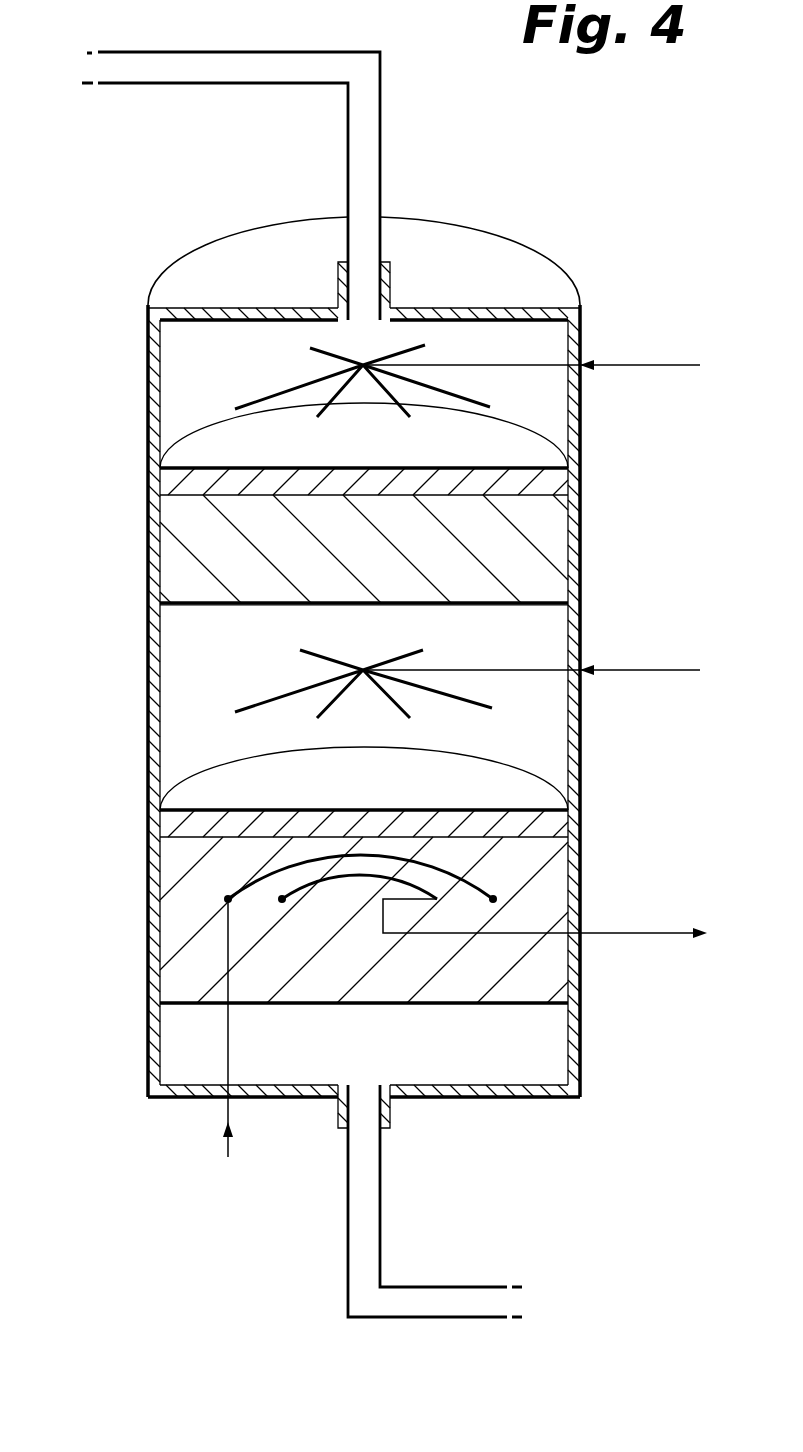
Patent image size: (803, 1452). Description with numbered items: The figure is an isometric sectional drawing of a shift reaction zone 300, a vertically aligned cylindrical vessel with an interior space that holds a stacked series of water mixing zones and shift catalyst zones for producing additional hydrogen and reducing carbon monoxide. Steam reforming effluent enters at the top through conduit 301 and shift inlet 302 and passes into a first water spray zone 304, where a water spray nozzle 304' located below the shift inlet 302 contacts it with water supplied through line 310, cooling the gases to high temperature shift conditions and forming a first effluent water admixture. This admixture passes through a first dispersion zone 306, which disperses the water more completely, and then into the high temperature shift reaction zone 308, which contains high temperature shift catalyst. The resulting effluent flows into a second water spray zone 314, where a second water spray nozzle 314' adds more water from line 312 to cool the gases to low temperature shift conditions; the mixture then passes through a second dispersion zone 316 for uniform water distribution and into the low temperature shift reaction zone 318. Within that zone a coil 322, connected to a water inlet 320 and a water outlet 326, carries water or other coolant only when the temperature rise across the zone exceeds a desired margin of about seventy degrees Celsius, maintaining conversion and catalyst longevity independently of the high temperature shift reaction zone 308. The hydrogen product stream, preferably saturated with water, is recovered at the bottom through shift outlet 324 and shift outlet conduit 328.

The shift reaction zone 300 is at (557, 259).
The conduit 301 is at (381, 72).
The shift inlet 302 is at (382, 277).
The first water spray zone 304 is at (364, 397).
The water spray nozzle 304' is at (358, 373).
The first dispersion zone 306 is at (568, 484).
The high temperature shift reaction zone 308 is at (552, 545).
The line 310 is at (628, 365).
The line 312 is at (643, 668).
The second water spray zone 314 is at (364, 659).
The second water spray nozzle 314' is at (363, 666).
The second dispersion zone 316 is at (568, 787).
The low temperature shift reaction zone 318 is at (554, 877).
The water inlet 320 is at (227, 1142).
The coil 322 is at (320, 873).
The shift outlet 324 is at (364, 1115).
The water outlet 326 is at (642, 933).
The shift outlet conduit 328 is at (382, 1205).